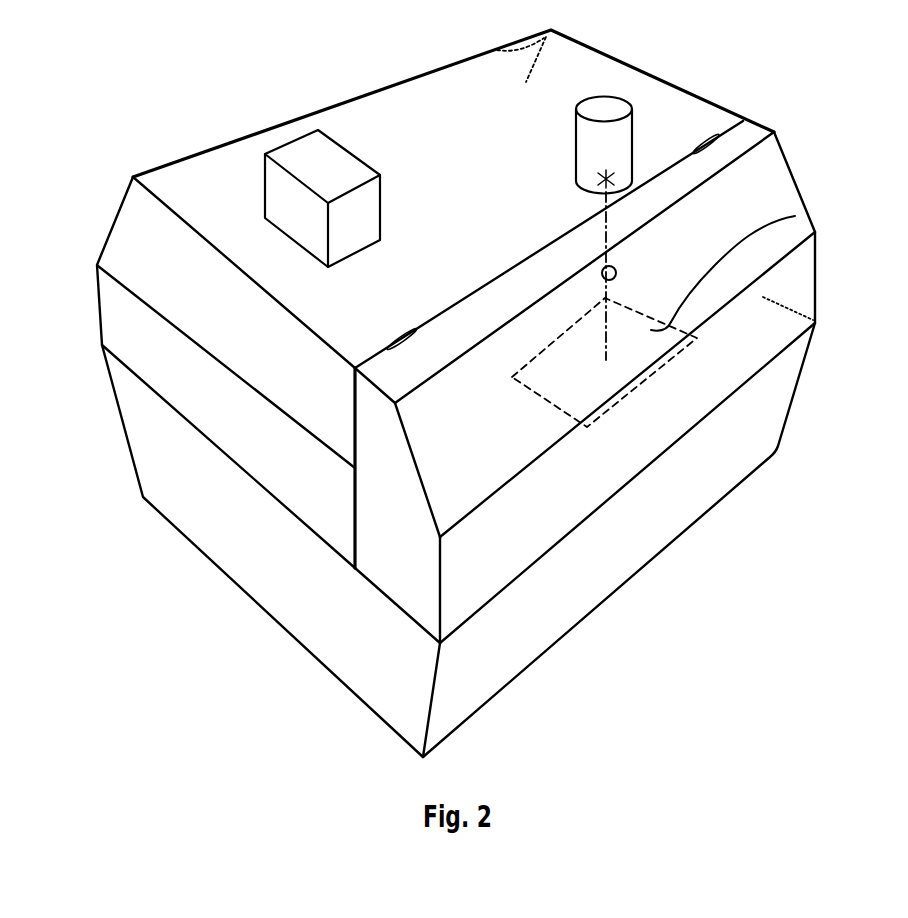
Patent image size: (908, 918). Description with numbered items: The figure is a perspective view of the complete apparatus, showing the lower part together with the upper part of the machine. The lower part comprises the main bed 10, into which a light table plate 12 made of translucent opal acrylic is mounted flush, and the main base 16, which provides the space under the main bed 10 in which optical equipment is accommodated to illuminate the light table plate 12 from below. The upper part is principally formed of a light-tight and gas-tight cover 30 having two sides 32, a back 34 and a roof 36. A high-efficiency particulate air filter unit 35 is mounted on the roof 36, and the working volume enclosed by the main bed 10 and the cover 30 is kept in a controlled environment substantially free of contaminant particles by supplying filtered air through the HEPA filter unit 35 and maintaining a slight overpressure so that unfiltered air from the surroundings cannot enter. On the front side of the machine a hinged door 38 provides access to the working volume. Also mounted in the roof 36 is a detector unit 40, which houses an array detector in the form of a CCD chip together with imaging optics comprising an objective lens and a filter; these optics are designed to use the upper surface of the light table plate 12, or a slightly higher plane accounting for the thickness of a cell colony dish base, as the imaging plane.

The main bed 10 is at (784, 323).
The light table plate 12 is at (795, 216).
The main base 16 is at (285, 597).
The cover 30 is at (92, 224).
The sides 32 is at (112, 320).
The back 34 is at (497, 50).
The HEPA filter unit 35 is at (278, 148).
The roof 36 is at (197, 190).
The hinged door 38 is at (775, 178).
The detector unit 40 is at (626, 134).